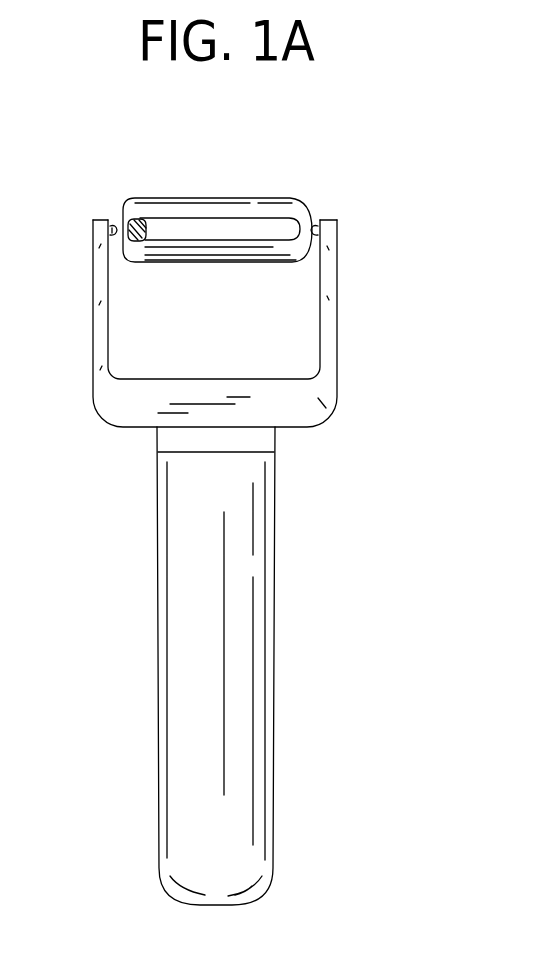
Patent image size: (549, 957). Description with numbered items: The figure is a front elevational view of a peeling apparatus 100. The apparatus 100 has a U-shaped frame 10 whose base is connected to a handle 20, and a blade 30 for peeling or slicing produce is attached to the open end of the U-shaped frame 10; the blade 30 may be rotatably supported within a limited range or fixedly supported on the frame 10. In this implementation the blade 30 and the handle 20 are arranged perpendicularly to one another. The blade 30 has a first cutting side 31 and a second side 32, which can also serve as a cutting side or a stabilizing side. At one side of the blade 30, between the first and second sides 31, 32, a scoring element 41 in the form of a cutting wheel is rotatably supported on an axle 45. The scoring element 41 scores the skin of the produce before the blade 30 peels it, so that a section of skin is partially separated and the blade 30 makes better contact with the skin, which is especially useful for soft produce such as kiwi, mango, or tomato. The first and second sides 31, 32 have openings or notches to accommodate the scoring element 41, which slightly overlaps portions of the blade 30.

The apparatus 100 is at (407, 177).
The U-shaped frame 10 is at (322, 405).
The handle 20 is at (236, 728).
The blade 30 is at (196, 235).
The first cutting side 31 is at (226, 205).
The second side 32 is at (303, 258).
The scoring element 41 is at (138, 238).
The axle 45 is at (127, 232).